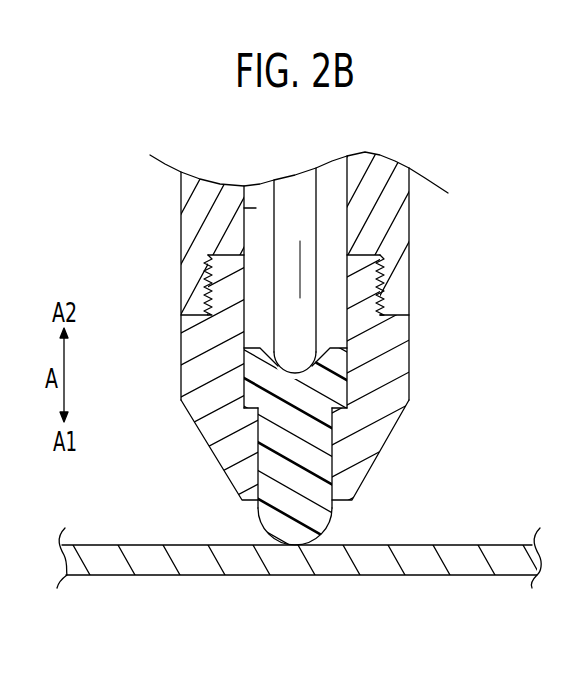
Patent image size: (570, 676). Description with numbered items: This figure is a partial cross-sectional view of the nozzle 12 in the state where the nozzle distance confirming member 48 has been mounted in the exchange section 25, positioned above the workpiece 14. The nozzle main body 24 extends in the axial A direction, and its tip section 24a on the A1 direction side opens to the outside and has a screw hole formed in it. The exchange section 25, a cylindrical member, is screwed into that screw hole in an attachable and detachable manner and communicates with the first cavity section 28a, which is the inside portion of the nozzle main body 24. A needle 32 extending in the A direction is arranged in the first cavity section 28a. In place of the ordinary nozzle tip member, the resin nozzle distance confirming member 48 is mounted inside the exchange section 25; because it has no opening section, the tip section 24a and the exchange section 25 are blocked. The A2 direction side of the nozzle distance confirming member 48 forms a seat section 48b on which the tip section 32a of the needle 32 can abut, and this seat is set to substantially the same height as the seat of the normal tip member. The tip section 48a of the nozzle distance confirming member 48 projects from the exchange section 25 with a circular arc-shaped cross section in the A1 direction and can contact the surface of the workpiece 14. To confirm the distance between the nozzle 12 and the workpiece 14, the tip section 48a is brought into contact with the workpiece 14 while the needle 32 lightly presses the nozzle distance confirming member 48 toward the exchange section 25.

The nozzle 12 is at (168, 230).
The workpiece 14 is at (154, 560).
The nozzle main body 24 is at (297, 274).
The tip section 24a is at (410, 274).
The exchange section 25 is at (375, 440).
The first cavity section 28a is at (246, 208).
The needle 32 is at (362, 250).
The tip section 32a is at (303, 350).
The nozzle distance confirming member 48 is at (265, 444).
The tip section 48a is at (293, 547).
The seat section 48b is at (270, 352).